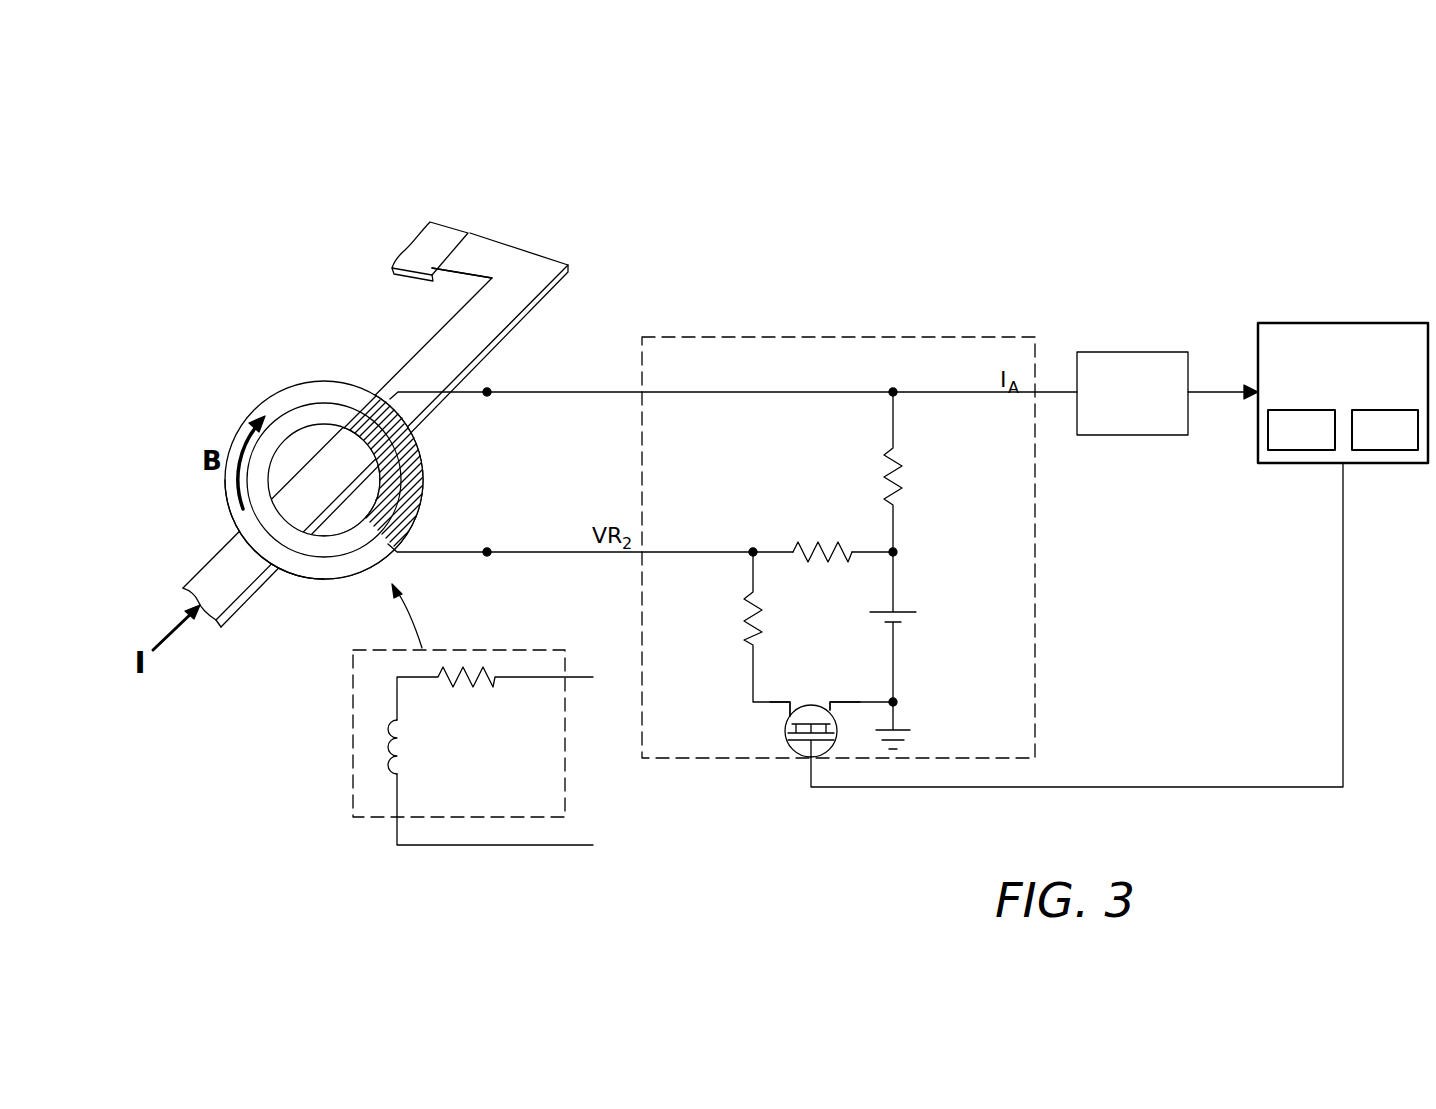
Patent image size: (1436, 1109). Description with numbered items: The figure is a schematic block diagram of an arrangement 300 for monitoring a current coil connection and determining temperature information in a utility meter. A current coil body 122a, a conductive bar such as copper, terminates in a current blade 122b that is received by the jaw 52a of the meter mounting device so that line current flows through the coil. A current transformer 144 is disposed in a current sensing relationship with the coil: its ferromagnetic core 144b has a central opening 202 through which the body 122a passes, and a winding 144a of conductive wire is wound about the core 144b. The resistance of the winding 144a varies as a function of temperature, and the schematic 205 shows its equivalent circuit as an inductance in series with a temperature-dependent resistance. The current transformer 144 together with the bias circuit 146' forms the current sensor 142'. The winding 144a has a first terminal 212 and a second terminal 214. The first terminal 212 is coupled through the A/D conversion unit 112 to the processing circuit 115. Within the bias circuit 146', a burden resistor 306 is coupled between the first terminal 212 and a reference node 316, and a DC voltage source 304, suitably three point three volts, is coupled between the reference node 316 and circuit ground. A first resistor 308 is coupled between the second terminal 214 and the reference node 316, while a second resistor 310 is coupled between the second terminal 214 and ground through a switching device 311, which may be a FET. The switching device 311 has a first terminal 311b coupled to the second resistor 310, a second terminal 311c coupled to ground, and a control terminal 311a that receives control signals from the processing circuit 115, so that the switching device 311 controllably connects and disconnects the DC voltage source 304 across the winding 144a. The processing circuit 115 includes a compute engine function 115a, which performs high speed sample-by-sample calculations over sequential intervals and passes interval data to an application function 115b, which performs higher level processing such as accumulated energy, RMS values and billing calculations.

The arrangement 300 is at (1096, 173).
The jaw 52a is at (447, 222).
The current blade 122b is at (483, 237).
The body 122a is at (525, 301).
The current transformer 144 is at (338, 337).
The central opening 202 is at (281, 457).
The winding 144a is at (440, 463).
The core 144b is at (316, 582).
The first terminal 212 is at (487, 395).
The second terminal 214 is at (487, 550).
The current sensor 142' is at (765, 233).
The bias circuit 146' is at (838, 511).
The A/D conversion unit 112 is at (1128, 352).
The processing circuit 115 is at (1341, 388).
The compute engine function 115a is at (1298, 452).
The application function 115b is at (1383, 452).
The burden resistor 306 is at (905, 470).
The first resistor 308 is at (812, 543).
The reference node 316 is at (898, 552).
The second resistor 310 is at (745, 618).
The DC voltage source 304 is at (898, 625).
The switching device 311 is at (1014, 645).
The control terminal 311a is at (808, 760).
The first terminal 311b is at (786, 714).
The second terminal 311c is at (820, 706).
The schematic 205 is at (567, 785).